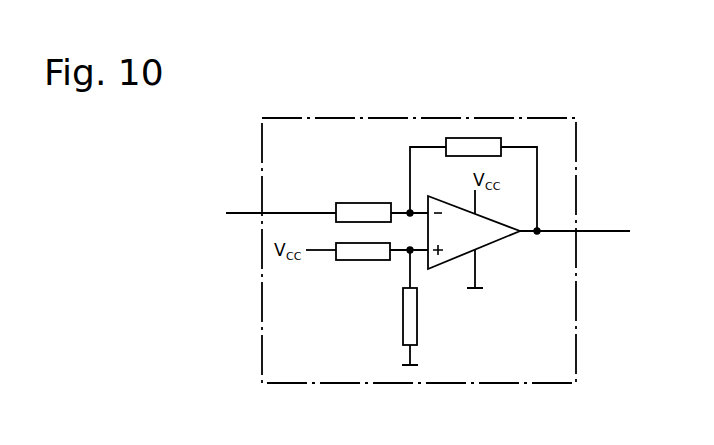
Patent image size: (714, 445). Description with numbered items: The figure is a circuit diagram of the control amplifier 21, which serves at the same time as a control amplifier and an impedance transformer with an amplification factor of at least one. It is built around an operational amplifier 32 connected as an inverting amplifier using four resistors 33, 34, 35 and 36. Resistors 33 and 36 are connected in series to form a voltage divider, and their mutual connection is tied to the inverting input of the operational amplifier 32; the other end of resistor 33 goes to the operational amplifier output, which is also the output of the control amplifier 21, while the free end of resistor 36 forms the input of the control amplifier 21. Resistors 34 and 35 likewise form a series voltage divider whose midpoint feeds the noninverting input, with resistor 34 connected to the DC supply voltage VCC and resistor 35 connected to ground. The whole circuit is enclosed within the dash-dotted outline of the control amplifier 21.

The control amplifier 21 is at (563, 323).
The operational amplifier 32 is at (499, 237).
The resistor 33 is at (467, 144).
The resistor 34 is at (360, 260).
The resistor 35 is at (412, 321).
The resistor 36 is at (368, 212).